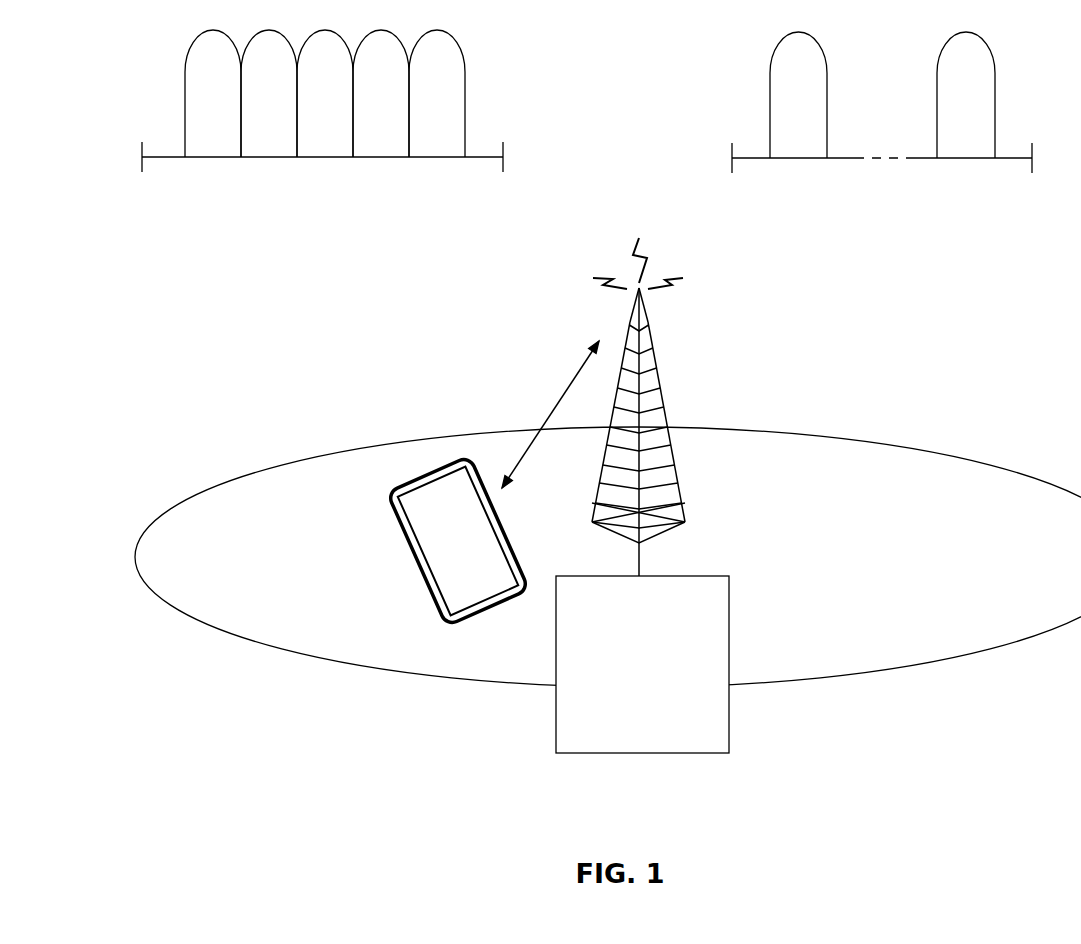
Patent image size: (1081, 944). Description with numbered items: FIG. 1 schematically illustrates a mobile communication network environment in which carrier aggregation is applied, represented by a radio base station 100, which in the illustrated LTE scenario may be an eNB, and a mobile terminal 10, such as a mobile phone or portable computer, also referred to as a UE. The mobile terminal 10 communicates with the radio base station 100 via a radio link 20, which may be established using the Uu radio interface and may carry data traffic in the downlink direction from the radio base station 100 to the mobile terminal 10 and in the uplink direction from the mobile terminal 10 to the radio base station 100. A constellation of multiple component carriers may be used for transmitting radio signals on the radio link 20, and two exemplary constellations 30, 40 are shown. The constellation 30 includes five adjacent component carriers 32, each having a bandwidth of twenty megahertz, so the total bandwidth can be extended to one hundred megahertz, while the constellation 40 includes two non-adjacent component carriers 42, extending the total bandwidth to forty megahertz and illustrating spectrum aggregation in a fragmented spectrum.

The mobile terminal 10 is at (382, 515).
The radio link 20 is at (555, 408).
The constellation 30 is at (473, 157).
The component carriers 32 is at (202, 108).
The constellation 40 is at (1003, 158).
The component carriers 42 is at (788, 109).
The radio base station 100 is at (729, 620).